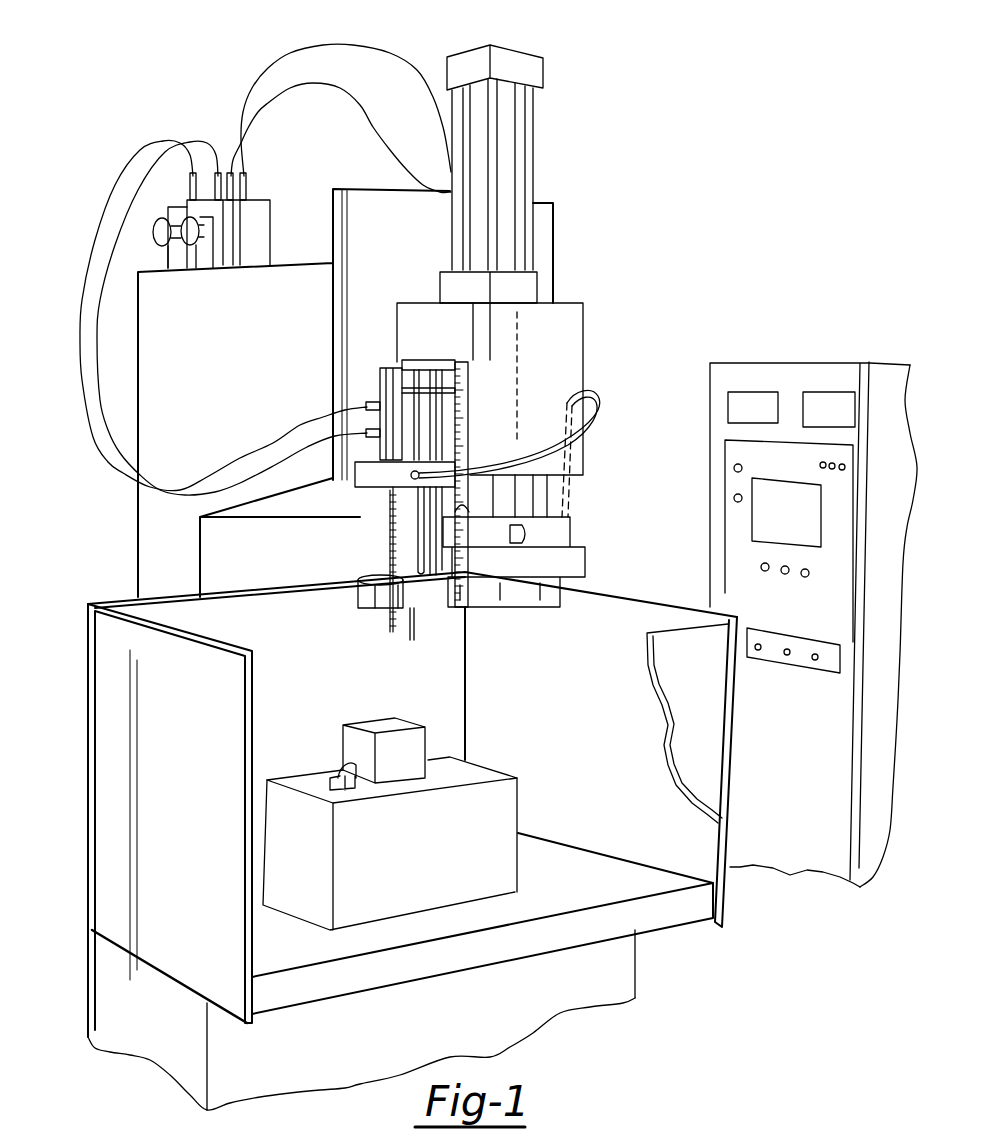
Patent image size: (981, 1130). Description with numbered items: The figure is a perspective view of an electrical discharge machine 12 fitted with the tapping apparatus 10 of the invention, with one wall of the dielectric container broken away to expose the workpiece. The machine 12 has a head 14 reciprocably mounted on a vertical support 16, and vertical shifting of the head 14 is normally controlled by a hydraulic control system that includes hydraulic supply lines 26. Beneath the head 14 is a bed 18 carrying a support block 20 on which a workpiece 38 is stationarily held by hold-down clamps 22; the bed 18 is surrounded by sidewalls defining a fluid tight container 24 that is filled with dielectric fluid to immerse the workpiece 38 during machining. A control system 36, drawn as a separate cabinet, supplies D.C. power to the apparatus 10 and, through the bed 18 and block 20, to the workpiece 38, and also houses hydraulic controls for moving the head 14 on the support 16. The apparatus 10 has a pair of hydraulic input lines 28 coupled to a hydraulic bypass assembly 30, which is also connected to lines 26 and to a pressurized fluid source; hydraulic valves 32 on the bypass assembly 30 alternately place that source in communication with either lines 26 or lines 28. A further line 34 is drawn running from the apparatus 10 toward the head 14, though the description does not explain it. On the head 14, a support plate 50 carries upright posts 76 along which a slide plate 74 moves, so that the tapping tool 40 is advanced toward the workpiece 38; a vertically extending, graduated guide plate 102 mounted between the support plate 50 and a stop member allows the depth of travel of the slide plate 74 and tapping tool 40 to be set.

The apparatus 10 is at (372, 384).
The electrical discharge machine 12 is at (611, 274).
The head 14 is at (572, 322).
The vertical support 16 is at (518, 162).
The bed 18 is at (660, 912).
The support block 20 is at (442, 872).
The hold-down clamps 22 is at (345, 770).
The fluid tight container 24 is at (412, 690).
The hydraulic supply lines 26 is at (414, 100).
The hydraulic input lines 28 is at (108, 279).
The hydraulic bypass assembly 30 is at (260, 200).
The hydraulic valves 32 is at (192, 246).
The hose 34 is at (593, 438).
The control system 36 is at (792, 380).
The workpiece 38 is at (412, 750).
The tapping tool 40 is at (392, 538).
The support plate 50 is at (360, 596).
The slide plate 74 is at (367, 475).
The upright posts 76 is at (410, 606).
The graduated guide plate 102 is at (467, 372).